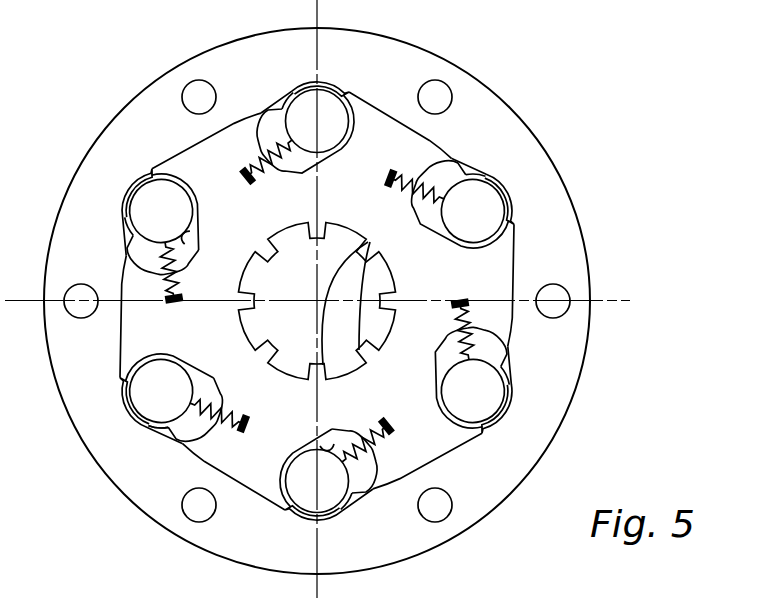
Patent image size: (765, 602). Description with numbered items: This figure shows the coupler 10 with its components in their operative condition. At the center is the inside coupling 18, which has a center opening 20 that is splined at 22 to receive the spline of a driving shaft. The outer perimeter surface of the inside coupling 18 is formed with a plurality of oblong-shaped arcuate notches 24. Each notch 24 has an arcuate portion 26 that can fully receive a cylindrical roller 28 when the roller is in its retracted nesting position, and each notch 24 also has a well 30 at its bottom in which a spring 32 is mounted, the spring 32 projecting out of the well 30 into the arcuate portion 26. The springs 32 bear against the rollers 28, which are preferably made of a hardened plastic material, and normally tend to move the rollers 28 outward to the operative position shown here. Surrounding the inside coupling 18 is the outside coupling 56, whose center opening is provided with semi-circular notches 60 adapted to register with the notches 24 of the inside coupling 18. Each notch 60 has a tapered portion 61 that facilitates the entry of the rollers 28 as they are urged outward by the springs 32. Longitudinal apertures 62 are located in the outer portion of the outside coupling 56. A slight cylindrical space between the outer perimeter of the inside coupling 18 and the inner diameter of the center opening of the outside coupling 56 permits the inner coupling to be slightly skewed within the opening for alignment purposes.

The coupler 10 is at (606, 118).
The inside coupling 18 is at (389, 136).
The center opening 20 is at (302, 277).
The spline 22 is at (370, 242).
The oblong-shaped arcuate notch 24 is at (192, 245).
The arcuate portion 26 is at (148, 256).
The cylindrical roller 28 is at (158, 213).
The well 30 is at (257, 185).
The spring 32 is at (183, 197).
The outside coupling 56 is at (472, 105).
The semi-circular notch 60 is at (152, 174).
The tapered portion 61 is at (177, 157).
The longitudinal aperture 62 is at (199, 97).